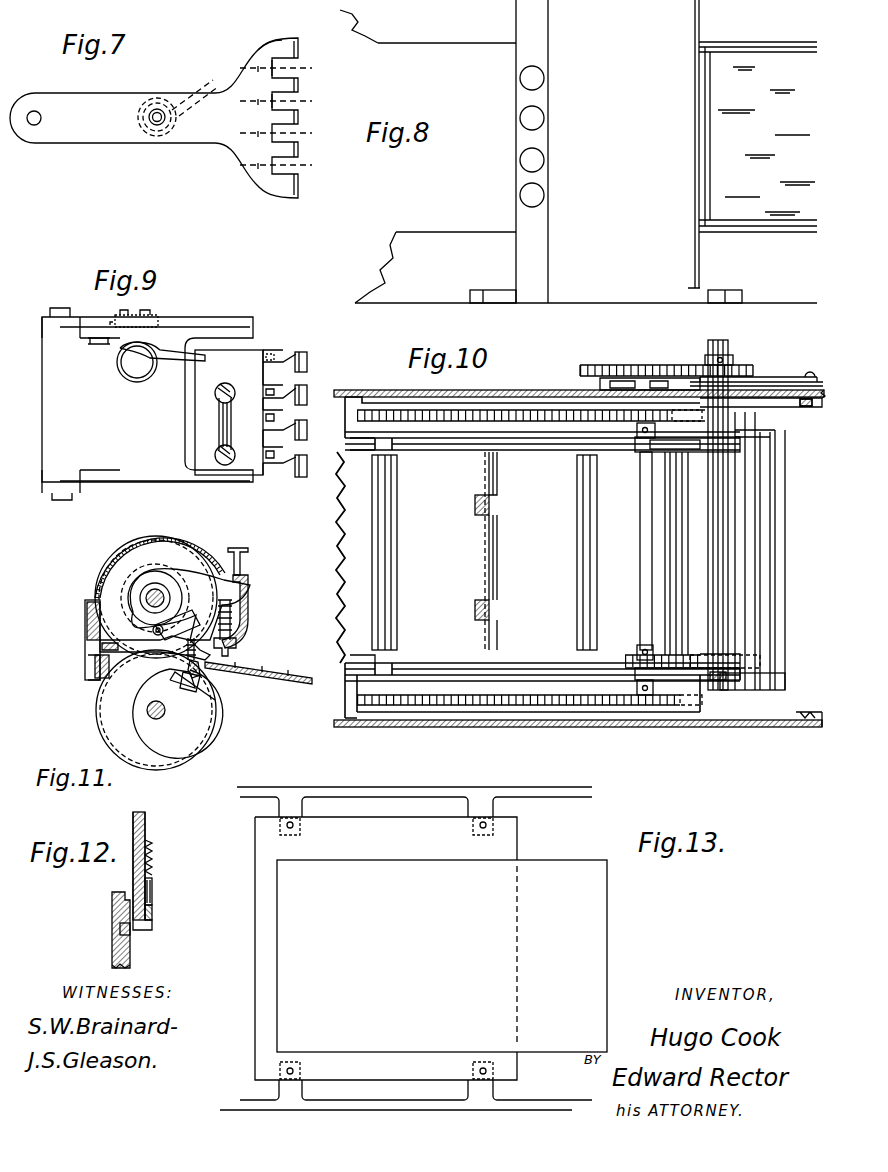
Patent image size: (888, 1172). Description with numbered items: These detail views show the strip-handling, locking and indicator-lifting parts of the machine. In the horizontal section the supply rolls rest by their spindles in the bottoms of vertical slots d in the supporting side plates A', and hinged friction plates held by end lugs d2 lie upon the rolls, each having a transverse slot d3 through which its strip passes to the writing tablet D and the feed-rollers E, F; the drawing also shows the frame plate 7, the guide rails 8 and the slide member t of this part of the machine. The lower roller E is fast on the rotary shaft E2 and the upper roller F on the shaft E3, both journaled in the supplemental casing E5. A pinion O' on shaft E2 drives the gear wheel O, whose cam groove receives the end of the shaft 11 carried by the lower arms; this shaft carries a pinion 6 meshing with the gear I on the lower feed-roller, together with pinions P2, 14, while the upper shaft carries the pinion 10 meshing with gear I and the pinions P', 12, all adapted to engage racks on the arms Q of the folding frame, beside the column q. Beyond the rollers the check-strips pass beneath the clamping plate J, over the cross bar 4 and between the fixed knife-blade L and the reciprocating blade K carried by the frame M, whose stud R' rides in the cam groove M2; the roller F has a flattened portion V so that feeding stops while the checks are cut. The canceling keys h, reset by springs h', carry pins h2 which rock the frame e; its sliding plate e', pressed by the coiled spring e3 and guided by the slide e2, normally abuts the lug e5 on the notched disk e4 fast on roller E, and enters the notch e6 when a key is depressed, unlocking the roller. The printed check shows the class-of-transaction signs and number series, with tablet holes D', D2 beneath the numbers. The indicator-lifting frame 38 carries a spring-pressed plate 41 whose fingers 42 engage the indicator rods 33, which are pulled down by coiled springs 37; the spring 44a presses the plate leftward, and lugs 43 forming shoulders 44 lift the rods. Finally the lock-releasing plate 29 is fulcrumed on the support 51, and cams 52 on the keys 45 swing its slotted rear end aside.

In FIG. 7, the plate 29 is at (118, 135).
In FIG. 7, the support 51 is at (160, 110).
In FIG. 7, the cam 52 is at (270, 50).
In FIG. 7, the keys 45 is at (292, 70).
In FIG. 8, the canceling keys h is at (545, 135).
In FIG. 11, the canceling keys h is at (239, 562).
In FIG. 8, the supplemental casing E5 is at (578, 151).
In FIG. 11, the supplemental casing E5 is at (143, 538).
In FIG. 9, the coiled springs 37 is at (130, 315).
In FIG. 9, the lifting frame 38 is at (228, 335).
In FIG. 9, the rods 33 is at (275, 352).
In FIG. 9, the shoulders 44 is at (302, 356).
In FIG. 9, the lugs 43 is at (306, 368).
In FIG. 9, the spring-pressed plate 41 is at (232, 392).
In FIG. 9, the spring 44a is at (142, 382).
In FIG. 9, the fingers 42 is at (290, 470).
In FIG. 10, the frame plate 7 is at (527, 402).
In FIG. 10, the gear wheel O is at (653, 374).
In FIG. 10, the pinion O' is at (768, 361).
In FIG. 10, the rotary shaft 11 is at (680, 375).
In FIG. 10, the plate t is at (800, 377).
In FIG. 10, the pinion 12 is at (628, 418).
In FIG. 10, the pinion 14 is at (693, 420).
In FIG. 10, the guide rails 8 is at (785, 518).
In FIG. 10, the end lugs d2 is at (380, 446).
In FIG. 10, the side arms of folding frame Q is at (437, 432).
In FIG. 10, the side plates A' is at (542, 557).
In FIG. 10, the vertical slots d is at (575, 460).
In FIG. 10, the transverse slot d3 is at (395, 515).
In FIG. 10, the column q is at (640, 590).
In FIG. 10, the pinion 6 is at (693, 655).
In FIG. 10, the gear I is at (762, 660).
In FIG. 10, the pinion 10 is at (635, 668).
In FIG. 10, the pinion P' is at (647, 726).
In FIG. 10, the pinion P2 is at (698, 708).
In FIG. 11, the feed-roller F is at (188, 548).
In FIG. 11, the cam groove M2 is at (128, 584).
In FIG. 11, the shaft E3 is at (155, 588).
In FIG. 11, the frame e is at (190, 604).
In FIG. 12, the frame e is at (148, 868).
In FIG. 11, the stud R' is at (178, 620).
In FIG. 11, the pins h2 is at (248, 600).
In FIG. 11, the resetting springs h' is at (240, 628).
In FIG. 11, the frame M is at (85, 605).
In FIG. 11, the knife-blade K is at (87, 623).
In FIG. 11, the clamping plate J is at (100, 652).
In FIG. 11, the flattened portion V is at (95, 668).
In FIG. 11, the knife-blade L is at (90, 680).
In FIG. 11, the lug e5 is at (199, 648).
In FIG. 12, the lug e5 is at (130, 932).
In FIG. 11, the sliding plate e' is at (202, 664).
In FIG. 12, the sliding plate e' is at (170, 914).
In FIG. 11, the coiled spring e3 is at (198, 678).
In FIG. 12, the coiled spring e3 is at (153, 860).
In FIG. 11, the writing tablet D is at (260, 665).
In FIG. 13, the writing tablet D is at (413, 948).
In FIG. 11, the holes D' is at (256, 658).
In FIG. 11, the holes D2 is at (293, 660).
In FIG. 11, the feed-roller E is at (214, 700).
In FIG. 11, the notched disk e4 is at (190, 730).
In FIG. 12, the notched disk e4 is at (120, 912).
In FIG. 11, the rotary shaft E2 is at (156, 719).
In FIG. 11, the notch e6 is at (154, 683).
In FIG. 11, the cross bar 4 is at (129, 692).
In FIG. 12, the slide e2 is at (154, 904).